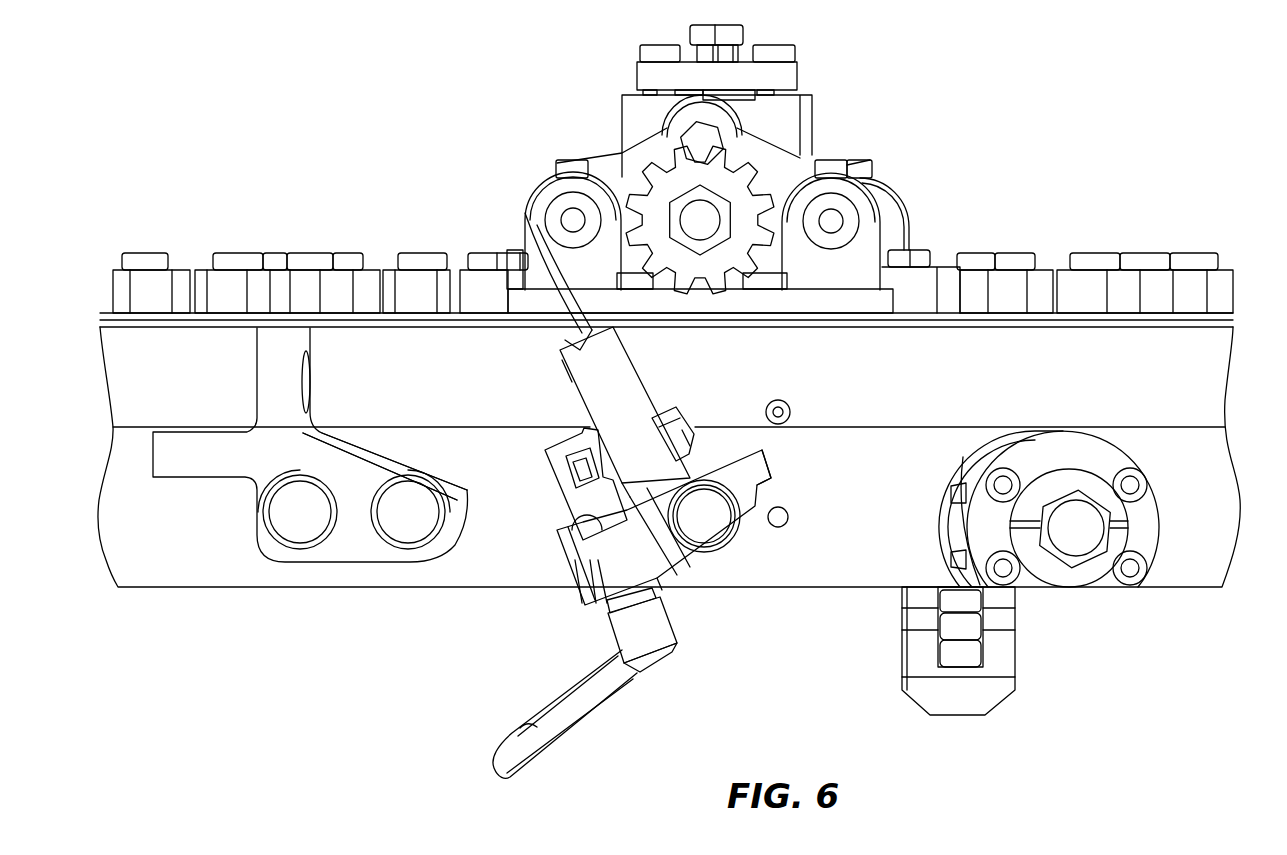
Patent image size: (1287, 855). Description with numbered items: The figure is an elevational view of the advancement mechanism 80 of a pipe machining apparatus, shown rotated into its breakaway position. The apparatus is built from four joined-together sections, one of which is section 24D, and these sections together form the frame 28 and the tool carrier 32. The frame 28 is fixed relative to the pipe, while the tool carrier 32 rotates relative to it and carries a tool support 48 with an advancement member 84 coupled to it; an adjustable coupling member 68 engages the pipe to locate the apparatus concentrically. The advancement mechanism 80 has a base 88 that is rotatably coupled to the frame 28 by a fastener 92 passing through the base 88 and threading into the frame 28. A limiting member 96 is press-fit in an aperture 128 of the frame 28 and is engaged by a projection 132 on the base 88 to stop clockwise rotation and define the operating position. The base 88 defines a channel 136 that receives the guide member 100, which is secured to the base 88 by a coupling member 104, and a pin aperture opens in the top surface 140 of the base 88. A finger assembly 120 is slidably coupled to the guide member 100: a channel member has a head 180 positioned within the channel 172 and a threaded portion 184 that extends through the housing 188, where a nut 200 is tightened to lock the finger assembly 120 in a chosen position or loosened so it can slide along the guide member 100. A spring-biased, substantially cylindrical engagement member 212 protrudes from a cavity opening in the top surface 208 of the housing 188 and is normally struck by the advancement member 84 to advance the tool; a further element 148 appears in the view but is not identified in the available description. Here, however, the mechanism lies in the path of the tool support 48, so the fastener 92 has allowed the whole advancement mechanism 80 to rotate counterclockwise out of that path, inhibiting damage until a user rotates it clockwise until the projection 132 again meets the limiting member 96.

The section 24D is at (1175, 600).
The frame 28 is at (200, 573).
The tool carrier 32 is at (478, 316).
The tool support 48 is at (868, 133).
The coupling member 68 is at (1132, 448).
The advancement mechanism 80 is at (708, 622).
The advancement member 84 is at (648, 190).
The base 88 is at (572, 601).
The fastener 92 is at (707, 527).
The limiting member 96 is at (792, 524).
The guide member 100 is at (542, 475).
The coupling member 104 is at (566, 752).
The finger assembly 120 is at (552, 368).
The aperture 128 is at (788, 512).
The projection 132 is at (777, 451).
The channel 136 is at (568, 515).
The top surface 140 is at (630, 486).
The collar 148 is at (597, 605).
The channel 172 is at (580, 440).
The head 180 is at (587, 500).
The threaded portion 184 is at (680, 418).
The housing 188 is at (638, 352).
The nut 200 is at (687, 455).
The top surface 208 is at (532, 265).
The engagement member 212 is at (562, 333).